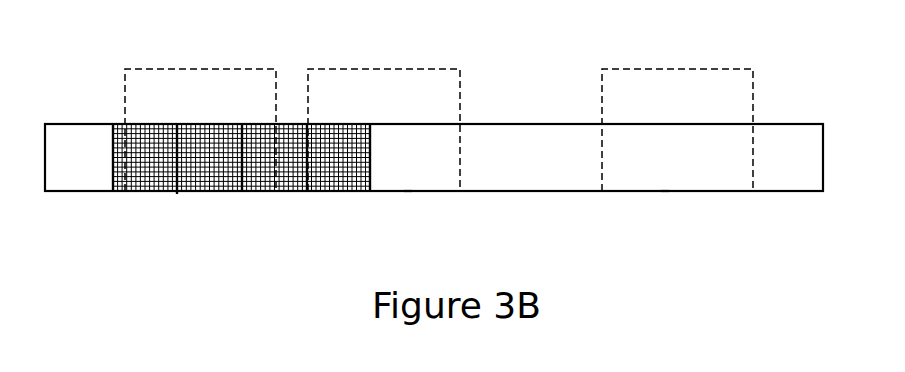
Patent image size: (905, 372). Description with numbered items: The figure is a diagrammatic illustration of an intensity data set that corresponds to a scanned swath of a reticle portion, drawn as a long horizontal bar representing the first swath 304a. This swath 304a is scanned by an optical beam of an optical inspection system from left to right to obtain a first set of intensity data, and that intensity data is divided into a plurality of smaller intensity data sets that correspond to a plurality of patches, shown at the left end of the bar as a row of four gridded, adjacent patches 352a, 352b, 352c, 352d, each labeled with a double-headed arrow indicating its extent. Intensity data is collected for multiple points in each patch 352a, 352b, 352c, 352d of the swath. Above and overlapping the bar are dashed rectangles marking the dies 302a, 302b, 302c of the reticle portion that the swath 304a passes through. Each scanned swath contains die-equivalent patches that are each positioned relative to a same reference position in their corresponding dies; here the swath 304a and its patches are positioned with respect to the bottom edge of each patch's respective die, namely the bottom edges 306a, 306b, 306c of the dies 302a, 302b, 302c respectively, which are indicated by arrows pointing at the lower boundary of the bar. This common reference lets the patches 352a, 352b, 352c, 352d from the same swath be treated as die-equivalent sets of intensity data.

The first die 302a is at (252, 90).
The second die 302b is at (367, 90).
The third die 302c is at (682, 97).
The first swath 304a is at (527, 147).
The bottom edge of first die 306a is at (176, 206).
The bottom edge of second die 306b is at (408, 203).
The bottom edge of third die 306c is at (665, 203).
The first patch 352a is at (177, 201).
The second patch 352b is at (242, 201).
The third patch 352c is at (307, 201).
The fourth patch 352d is at (370, 201).